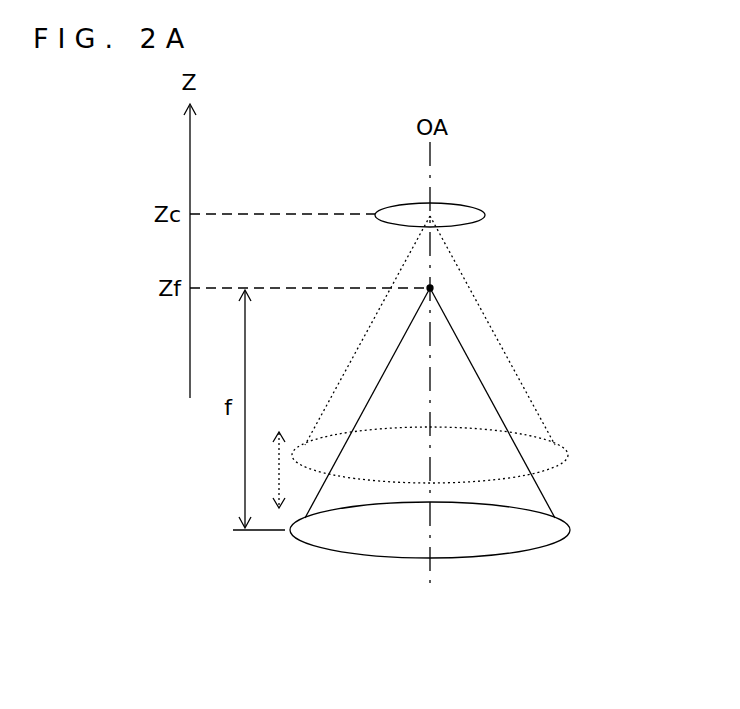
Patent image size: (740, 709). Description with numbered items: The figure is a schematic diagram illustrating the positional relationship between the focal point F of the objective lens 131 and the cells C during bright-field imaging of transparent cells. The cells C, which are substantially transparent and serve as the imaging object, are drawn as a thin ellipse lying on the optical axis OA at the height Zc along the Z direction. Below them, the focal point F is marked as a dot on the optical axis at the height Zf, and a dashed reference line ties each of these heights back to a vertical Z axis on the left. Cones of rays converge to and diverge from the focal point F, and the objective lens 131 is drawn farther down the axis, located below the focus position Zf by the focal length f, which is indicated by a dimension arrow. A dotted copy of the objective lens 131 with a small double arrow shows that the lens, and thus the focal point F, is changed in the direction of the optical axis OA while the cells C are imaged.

The objective lens 131 is at (570, 455).
The cells C is at (475, 207).
The focal point F is at (430, 288).